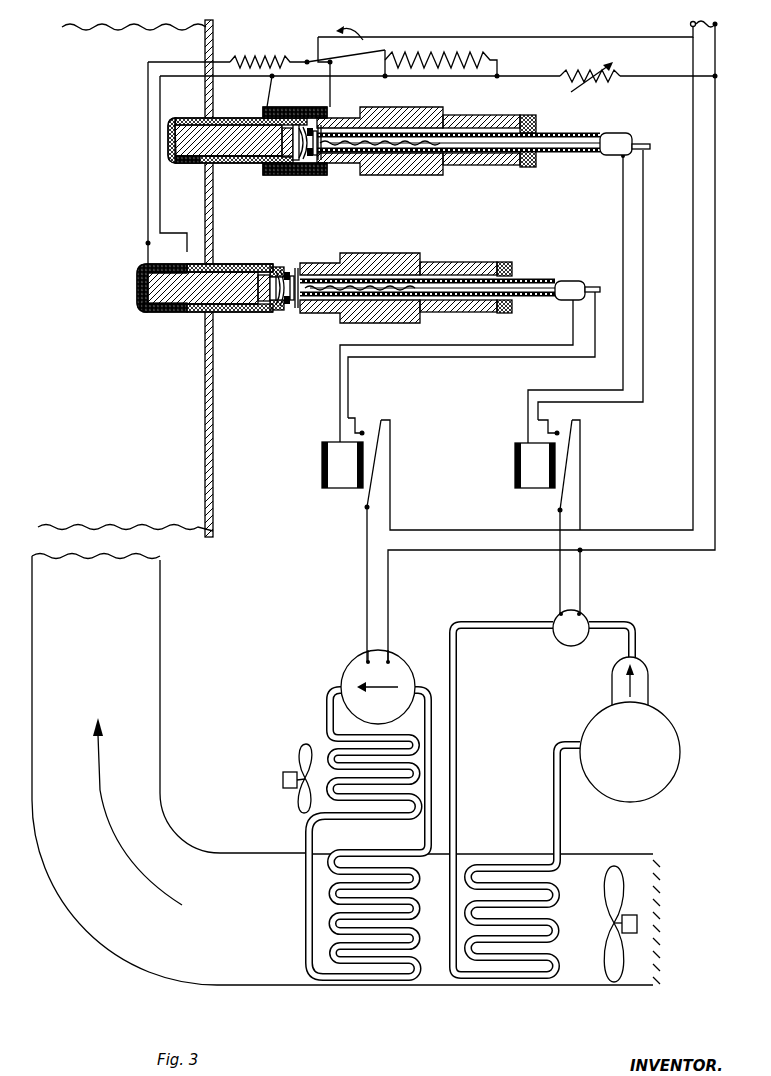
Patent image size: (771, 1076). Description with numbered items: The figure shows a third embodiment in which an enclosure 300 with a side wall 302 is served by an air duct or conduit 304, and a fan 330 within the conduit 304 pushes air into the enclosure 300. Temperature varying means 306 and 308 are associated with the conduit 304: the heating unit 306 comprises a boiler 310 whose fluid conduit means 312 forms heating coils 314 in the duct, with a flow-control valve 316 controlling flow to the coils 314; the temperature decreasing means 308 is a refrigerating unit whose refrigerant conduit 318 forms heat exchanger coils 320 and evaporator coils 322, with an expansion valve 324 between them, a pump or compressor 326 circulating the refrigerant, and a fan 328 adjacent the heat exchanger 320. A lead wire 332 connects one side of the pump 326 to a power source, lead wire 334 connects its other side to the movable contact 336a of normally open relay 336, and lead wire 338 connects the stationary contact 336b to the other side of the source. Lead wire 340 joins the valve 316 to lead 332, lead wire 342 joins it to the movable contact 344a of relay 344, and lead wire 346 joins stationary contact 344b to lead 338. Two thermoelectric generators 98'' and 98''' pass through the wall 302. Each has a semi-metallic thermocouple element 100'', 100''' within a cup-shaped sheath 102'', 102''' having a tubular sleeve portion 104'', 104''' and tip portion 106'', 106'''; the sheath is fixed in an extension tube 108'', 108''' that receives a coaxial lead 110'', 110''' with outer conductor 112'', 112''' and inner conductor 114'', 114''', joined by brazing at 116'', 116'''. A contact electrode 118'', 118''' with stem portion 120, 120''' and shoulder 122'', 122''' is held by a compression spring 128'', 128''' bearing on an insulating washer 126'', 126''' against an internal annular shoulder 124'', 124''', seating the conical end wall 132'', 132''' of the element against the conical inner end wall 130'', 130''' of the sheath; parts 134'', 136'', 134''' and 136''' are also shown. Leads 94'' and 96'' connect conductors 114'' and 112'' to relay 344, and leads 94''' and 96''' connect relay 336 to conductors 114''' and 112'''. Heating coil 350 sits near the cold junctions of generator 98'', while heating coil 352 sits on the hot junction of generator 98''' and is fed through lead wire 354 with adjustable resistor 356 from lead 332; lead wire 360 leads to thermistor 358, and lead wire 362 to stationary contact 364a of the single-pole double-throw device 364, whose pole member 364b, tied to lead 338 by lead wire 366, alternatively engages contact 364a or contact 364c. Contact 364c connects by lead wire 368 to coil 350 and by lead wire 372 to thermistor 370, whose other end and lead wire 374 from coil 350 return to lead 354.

The enclosure 300 is at (110, 457).
The side wall 302 is at (213, 397).
The air duct or conduit 304 is at (98, 664).
The temperature varying means (heating unit) 306 is at (641, 656).
The temperature varying means (temperature decreasing means) 308 is at (345, 659).
The boiler 310 is at (680, 730).
The fluid conduit means 312 is at (457, 725).
The heating coils 314 is at (517, 978).
The flow-control valve 316 is at (590, 612).
The fluid conduit 318 is at (326, 710).
The heat exchanger coils 320 is at (330, 745).
The evaporator coils 322 is at (370, 985).
The expansion valve 324 is at (305, 842).
The fluid pump or compressor 326 is at (405, 658).
The fan 328 is at (300, 754).
The fan 330 is at (627, 966).
The lead wire 332 is at (715, 413).
The lead wire 334 is at (365, 588).
The normally open relay 336 is at (322, 483).
The movable contact member 336a is at (374, 470).
The stationary contact 336b is at (360, 420).
The lead wire 338 is at (693, 425).
The lead wire 340 is at (582, 572).
The lead wire 342 is at (558, 582).
The normally open relay 344 is at (515, 470).
The movable contact 344a is at (566, 472).
The stationary contact 344b is at (570, 434).
The lead wire 346 is at (580, 513).
The electric heating coil 350 is at (295, 103).
The electric heating coil 352 is at (146, 244).
The lead wire 354 is at (445, 78).
The adjustable resistor 356 is at (580, 72).
The thermistor 358 is at (222, 60).
The lead wire 360 is at (147, 172).
The lead wire 362 is at (210, 58).
The single-pole double-throw circuit controlling device 364 is at (355, 46).
The stationary contact 364a is at (307, 60).
The electrical pole member 364b is at (332, 62).
The stationary contact 364c is at (385, 78).
The lead wire 366 is at (585, 38).
The lead wire 368 is at (328, 86).
The thermistor 370 is at (490, 55).
The lead wire 372 is at (398, 82).
The lead wire 374 is at (268, 86).
The lead wire 94'' is at (602, 298).
The lead wire 96'' is at (608, 285).
The lead wire 94''' is at (457, 369).
The lead wire 96''' is at (478, 354).
The thermoelectric generator 98'' is at (200, 167).
The thermocouple element means 100'' is at (229, 174).
The sheath member 102'' is at (235, 129).
The tubular sleeve portion 104'' is at (272, 135).
The tip portion 106'' is at (195, 141).
The extension tube 108'' is at (418, 154).
The coaxial thermoelectric generator lead 110'' is at (626, 128).
The tubular outer conductor 112'' is at (460, 167).
The inner conductor 114'' is at (457, 121).
The soldered connection 116'' is at (536, 153).
The contact electrode 118'' is at (284, 187).
The stem portion 120 is at (332, 163).
The shoulder 122'' is at (291, 161).
The internal annular shoulder 124'' is at (328, 173).
The insulating washer 126'' is at (346, 125).
The compression spring 128'' is at (290, 174).
The conical inner end wall 130'' is at (137, 133).
The conical end wall 132'' is at (148, 163).
The spring 134'' is at (380, 172).
The capillary 136'' is at (465, 167).
The thermoelectric generator 98''' is at (201, 314).
The thermocouple element means 100''' is at (203, 321).
The sheath member 102''' is at (230, 274).
The tubular sleeve portion 104''' is at (230, 242).
The tip portion 106''' is at (167, 288).
The extension tube 108''' is at (398, 278).
The coaxial thermoelectric generator lead 110''' is at (584, 278).
The tubular outer conductor 112''' is at (433, 312).
The inner conductor 114''' is at (435, 267).
The soldered connection 116''' is at (508, 276).
The contact electrode 118''' is at (273, 265).
The stem portion 120''' is at (318, 308).
The shoulder 122''' is at (298, 264).
The internal annular shoulder 124''' is at (311, 315).
The insulating washer 126''' is at (299, 322).
The compression spring 128''' is at (255, 313).
The conical inner end wall 130''' is at (134, 283).
The conical end wall 132''' is at (133, 315).
The spring 134''' is at (360, 254).
The capillary 136''' is at (432, 260).